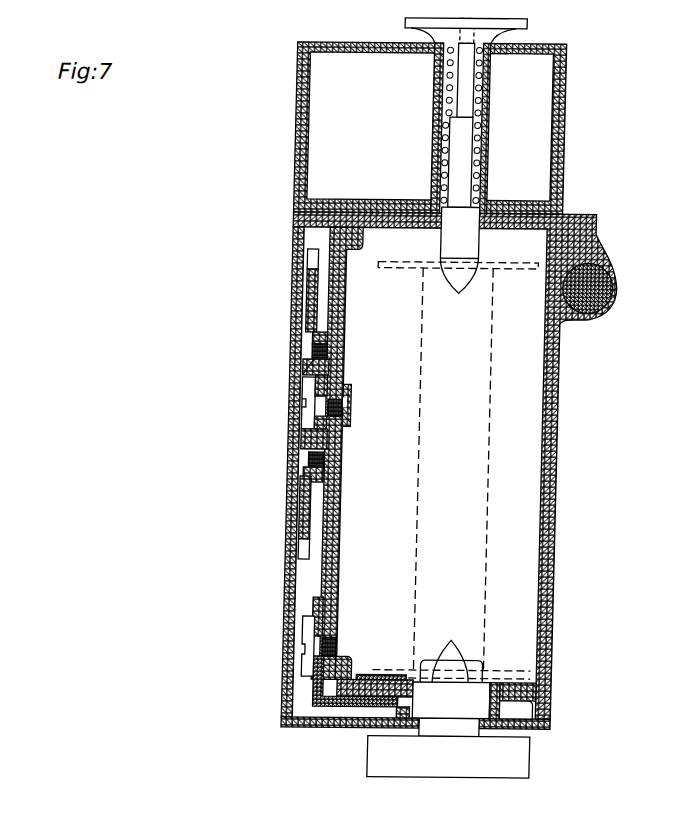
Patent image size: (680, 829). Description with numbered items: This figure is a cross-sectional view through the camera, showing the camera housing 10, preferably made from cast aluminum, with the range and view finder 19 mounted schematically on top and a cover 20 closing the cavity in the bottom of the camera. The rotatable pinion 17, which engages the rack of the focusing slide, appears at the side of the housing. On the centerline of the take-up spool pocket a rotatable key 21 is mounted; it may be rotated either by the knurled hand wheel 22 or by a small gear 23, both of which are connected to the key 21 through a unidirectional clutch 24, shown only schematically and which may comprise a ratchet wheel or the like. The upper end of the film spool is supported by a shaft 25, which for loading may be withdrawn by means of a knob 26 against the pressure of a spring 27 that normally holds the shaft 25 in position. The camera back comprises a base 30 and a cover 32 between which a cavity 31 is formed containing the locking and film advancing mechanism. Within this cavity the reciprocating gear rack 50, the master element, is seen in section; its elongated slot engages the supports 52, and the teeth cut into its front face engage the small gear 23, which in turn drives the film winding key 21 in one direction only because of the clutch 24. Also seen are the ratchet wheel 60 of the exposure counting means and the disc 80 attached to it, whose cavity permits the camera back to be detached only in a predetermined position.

The camera housing 10 is at (588, 222).
The rotatable pinion 17 is at (609, 266).
The range and view finder 19 is at (558, 107).
The cover 20 is at (298, 728).
The rotatable key 21 is at (484, 660).
The hand wheel 22 is at (539, 755).
The small gear 23 is at (401, 712).
The unidirectional clutch 24 is at (474, 700).
The shaft 25 is at (453, 282).
The knob 26 is at (517, 22).
The spring 27 is at (428, 58).
The base 30 is at (341, 470).
The cavity 31 is at (317, 573).
The cover 32 is at (301, 494).
The gear rack 50 is at (318, 605).
The supports 52 is at (319, 640).
The ratchet wheel 60 is at (304, 293).
The disc 80 is at (329, 372).